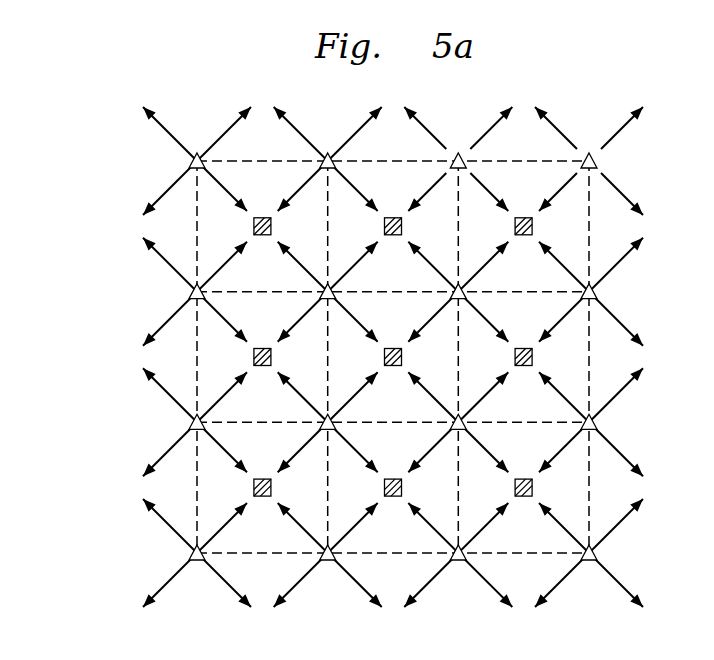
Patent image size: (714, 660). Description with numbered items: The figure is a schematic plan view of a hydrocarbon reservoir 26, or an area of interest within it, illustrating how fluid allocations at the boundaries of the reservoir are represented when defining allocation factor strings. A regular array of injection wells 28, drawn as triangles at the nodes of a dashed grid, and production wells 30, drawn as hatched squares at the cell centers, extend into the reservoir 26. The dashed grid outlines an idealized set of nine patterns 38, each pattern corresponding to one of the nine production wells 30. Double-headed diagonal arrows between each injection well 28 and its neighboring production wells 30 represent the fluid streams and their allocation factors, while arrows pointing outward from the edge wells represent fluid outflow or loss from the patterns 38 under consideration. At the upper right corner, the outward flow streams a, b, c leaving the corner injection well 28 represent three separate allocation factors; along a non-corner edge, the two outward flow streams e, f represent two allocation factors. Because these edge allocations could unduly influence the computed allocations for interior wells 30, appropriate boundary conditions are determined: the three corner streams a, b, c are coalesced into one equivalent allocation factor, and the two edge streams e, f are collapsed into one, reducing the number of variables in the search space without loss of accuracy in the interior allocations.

The hydrocarbon reservoir 26 is at (93, 86).
The injection wells 28 is at (187, 161).
The production wells 30 is at (253, 226).
The patterns 38 is at (283, 159).
The flow stream a is at (561, 129).
The flow stream b is at (617, 137).
The flow stream c is at (621, 193).
The flow stream e is at (620, 262).
The flow stream f is at (620, 323).